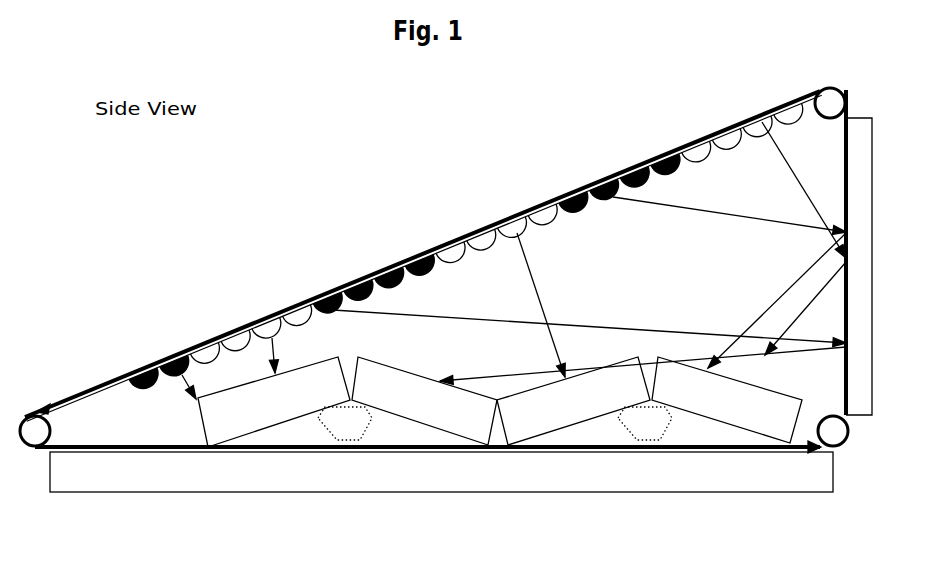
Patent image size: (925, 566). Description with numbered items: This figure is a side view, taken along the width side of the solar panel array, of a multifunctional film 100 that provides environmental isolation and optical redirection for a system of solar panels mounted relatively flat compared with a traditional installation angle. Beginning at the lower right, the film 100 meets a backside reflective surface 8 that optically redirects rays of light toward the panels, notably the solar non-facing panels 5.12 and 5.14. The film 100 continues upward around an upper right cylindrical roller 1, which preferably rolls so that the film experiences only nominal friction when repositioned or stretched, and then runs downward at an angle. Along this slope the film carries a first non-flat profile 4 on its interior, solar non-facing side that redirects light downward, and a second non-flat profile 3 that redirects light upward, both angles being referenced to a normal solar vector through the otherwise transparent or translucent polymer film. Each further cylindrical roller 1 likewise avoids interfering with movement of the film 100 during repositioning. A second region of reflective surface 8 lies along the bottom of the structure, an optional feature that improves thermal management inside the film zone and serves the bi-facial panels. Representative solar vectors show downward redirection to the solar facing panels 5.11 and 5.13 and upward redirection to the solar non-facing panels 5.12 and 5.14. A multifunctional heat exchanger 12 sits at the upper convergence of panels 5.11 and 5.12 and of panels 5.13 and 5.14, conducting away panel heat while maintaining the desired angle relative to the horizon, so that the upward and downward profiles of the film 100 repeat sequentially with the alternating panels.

The cylindrical roller 1 is at (434, 267).
The second non-flat profile 3 is at (404, 271).
The first non-flat profile 4 is at (497, 233).
The solar facing panel 5.11 is at (274, 402).
The solar non-facing panel 5.12 is at (424, 401).
The solar facing panel 5.13 is at (573, 401).
The solar non-facing panel 5.14 is at (727, 400).
The reflective surface 8 is at (454, 291).
The multifunctional heat exchanger 12 is at (495, 423).
The multifunctional film 100 is at (423, 256).